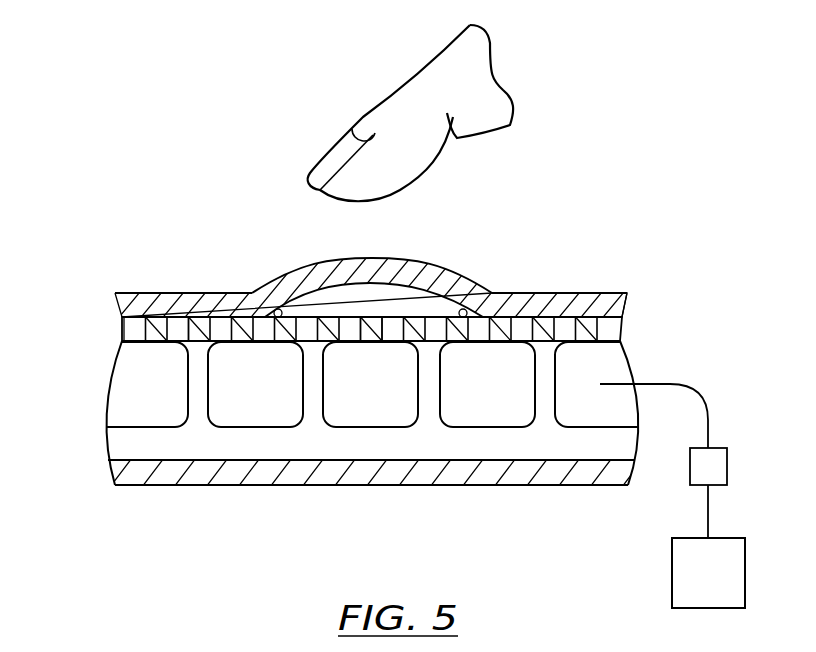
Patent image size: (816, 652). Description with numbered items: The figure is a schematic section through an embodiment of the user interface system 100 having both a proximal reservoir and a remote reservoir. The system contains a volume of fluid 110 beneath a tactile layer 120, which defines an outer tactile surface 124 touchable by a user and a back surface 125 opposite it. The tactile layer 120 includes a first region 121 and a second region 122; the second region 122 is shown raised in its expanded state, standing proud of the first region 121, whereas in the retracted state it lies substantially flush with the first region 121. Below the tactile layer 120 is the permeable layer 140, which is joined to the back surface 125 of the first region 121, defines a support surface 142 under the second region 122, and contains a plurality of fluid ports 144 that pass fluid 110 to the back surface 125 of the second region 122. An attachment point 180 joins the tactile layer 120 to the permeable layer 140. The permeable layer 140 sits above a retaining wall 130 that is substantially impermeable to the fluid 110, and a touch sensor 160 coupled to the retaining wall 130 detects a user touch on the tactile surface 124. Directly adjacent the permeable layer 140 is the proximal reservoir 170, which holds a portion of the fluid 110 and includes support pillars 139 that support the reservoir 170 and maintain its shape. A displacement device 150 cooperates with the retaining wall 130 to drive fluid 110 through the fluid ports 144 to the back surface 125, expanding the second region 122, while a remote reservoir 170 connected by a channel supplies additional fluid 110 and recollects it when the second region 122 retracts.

The user interface system 100 is at (132, 251).
The volume of fluid 110 is at (387, 408).
The tactile layer 120 is at (603, 308).
The first region 121 is at (558, 248).
The second region 122 is at (308, 248).
The tactile surface 124 is at (608, 303).
The back surface 125 is at (402, 297).
The retaining wall 130 is at (257, 437).
The support pillars 139 is at (313, 395).
The permeable layer 140 is at (615, 325).
The support surface 142 is at (372, 317).
The fluid ports 144 is at (183, 327).
The displacement device 150 is at (715, 465).
The touch sensor 160 is at (370, 472).
The reservoir 170 is at (492, 385).
The attachment point 180 is at (276, 309).